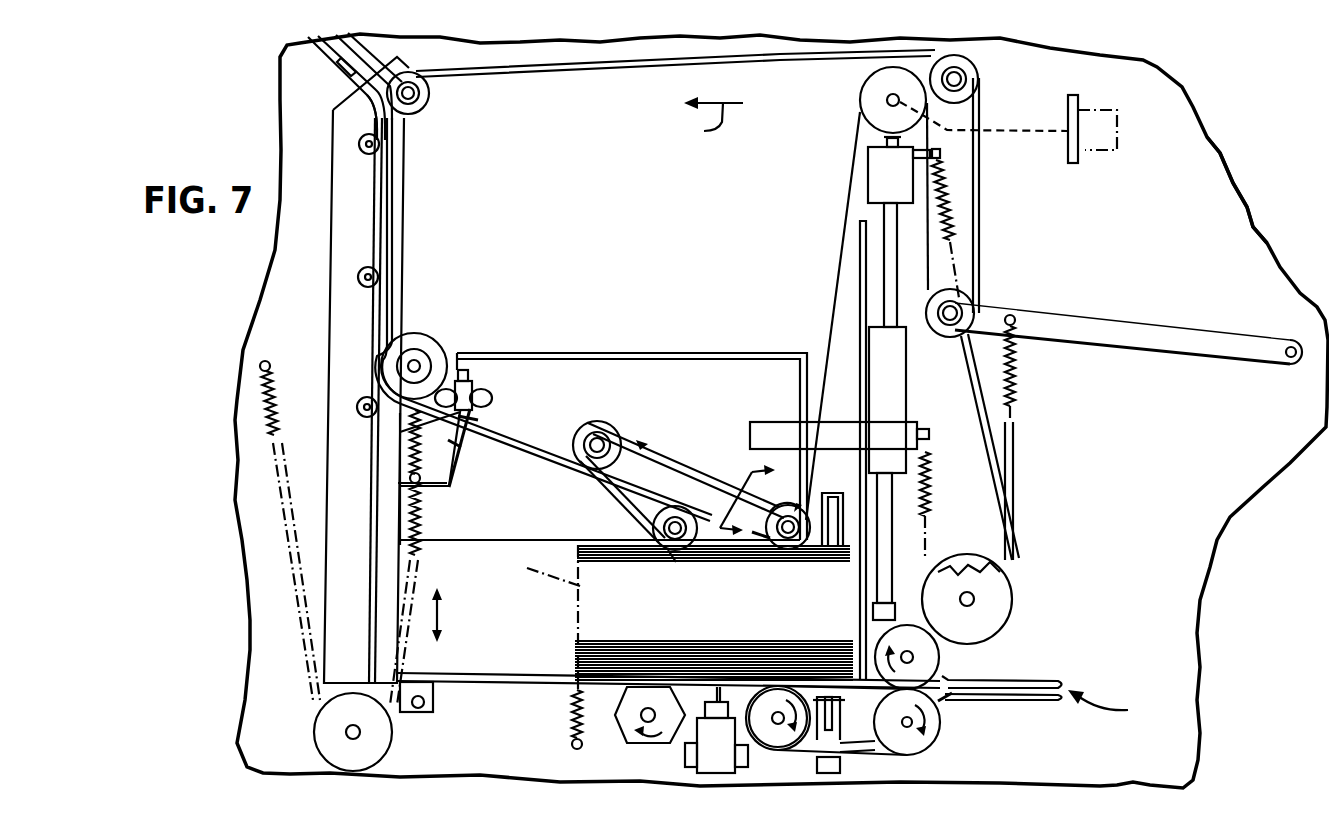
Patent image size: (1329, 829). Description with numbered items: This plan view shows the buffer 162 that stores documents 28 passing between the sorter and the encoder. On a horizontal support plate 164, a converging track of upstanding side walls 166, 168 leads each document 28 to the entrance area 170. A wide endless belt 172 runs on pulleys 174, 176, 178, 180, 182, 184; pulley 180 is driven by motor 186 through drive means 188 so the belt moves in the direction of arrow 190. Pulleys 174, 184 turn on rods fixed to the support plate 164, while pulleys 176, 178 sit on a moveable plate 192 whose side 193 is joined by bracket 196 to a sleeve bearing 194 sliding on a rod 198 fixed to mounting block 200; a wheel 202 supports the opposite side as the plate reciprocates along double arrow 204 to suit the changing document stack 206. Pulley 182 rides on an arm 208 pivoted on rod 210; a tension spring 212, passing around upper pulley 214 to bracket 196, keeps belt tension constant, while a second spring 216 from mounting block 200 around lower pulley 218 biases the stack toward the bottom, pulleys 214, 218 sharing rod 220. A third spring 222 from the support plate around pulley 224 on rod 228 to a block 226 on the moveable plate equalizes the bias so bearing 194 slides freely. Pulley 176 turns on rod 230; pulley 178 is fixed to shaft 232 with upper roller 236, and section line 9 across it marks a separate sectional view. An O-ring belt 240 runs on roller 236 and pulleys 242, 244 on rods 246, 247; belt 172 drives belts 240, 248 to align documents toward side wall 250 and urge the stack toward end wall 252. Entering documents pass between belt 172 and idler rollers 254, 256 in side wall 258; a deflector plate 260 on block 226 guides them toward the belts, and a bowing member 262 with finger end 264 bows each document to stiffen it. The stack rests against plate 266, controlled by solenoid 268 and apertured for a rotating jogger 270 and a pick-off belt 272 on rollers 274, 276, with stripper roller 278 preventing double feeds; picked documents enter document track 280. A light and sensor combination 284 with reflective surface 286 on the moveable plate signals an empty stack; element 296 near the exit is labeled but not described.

The document 28 is at (345, 66).
The buffer 162 is at (1238, 138).
The support plate 164 is at (1238, 200).
The side wall 166 is at (312, 46).
The side wall 168 is at (372, 44).
The entrance area 170 is at (372, 100).
The endless belt 172 is at (392, 218).
The pulley 174 is at (428, 100).
The pulley 176 is at (408, 334).
The pulley 178 is at (772, 512).
The pulley 180 is at (860, 95).
The pulley 182 is at (972, 305).
The pulley 184 is at (978, 78).
The motor 186 is at (1105, 150).
The drive means 188 is at (1003, 128).
The arrow 190 is at (705, 121).
The moveable plate 192 is at (562, 385).
The side 193 is at (792, 400).
The sleeve bearing 194 is at (893, 396).
The bracket 196 is at (762, 422).
The rod 198 is at (884, 215).
The mounting block 200 is at (878, 158).
The rotatable wheel 202 is at (468, 370).
The double arrow 204 is at (439, 618).
The document stack 206 is at (671, 647).
The arm 208 is at (1143, 324).
The rod 210 is at (1285, 362).
The tension spring 212 is at (1012, 375).
The upper pulley 214 is at (1000, 628).
The second tension spring 216 is at (945, 210).
The lower pulley 218 is at (975, 565).
The rod 220 is at (975, 600).
The third tension spring 222 is at (267, 410).
The pulley 224 is at (385, 740).
The block 226 is at (440, 480).
The rod 228 is at (347, 732).
The rod 230 is at (424, 360).
The shaft 232 is at (791, 549).
The upper roller 236 is at (776, 543).
The endless belt 240 is at (614, 495).
The pulley 242 is at (590, 422).
The pulley 244 is at (653, 528).
The rod 246 is at (606, 442).
The rod 247 is at (672, 552).
The endless belt 248 is at (670, 458).
The side wall 250 is at (860, 240).
The end wall 252 is at (475, 688).
The idler roller 254 is at (362, 152).
The idler roller 256 is at (358, 277).
The side wall 258 is at (372, 318).
The deflector plate 260 is at (358, 403).
The document bowing member 262 is at (462, 438).
The finger end 264 is at (478, 419).
The plate 266 is at (560, 673).
The solenoid 268 is at (697, 752).
The jogger 270 is at (650, 690).
The pick-off belt 272 is at (884, 766).
The roller 274 is at (940, 735).
The roller 276 is at (765, 690).
The stripper roller 278 is at (940, 657).
The document track 280 is at (1114, 706).
The light and sensor combination 284 is at (830, 697).
The reflective surface 286 is at (845, 531).
The exit guide 296 is at (950, 699).
The section line 9- 9 is at (747, 500).